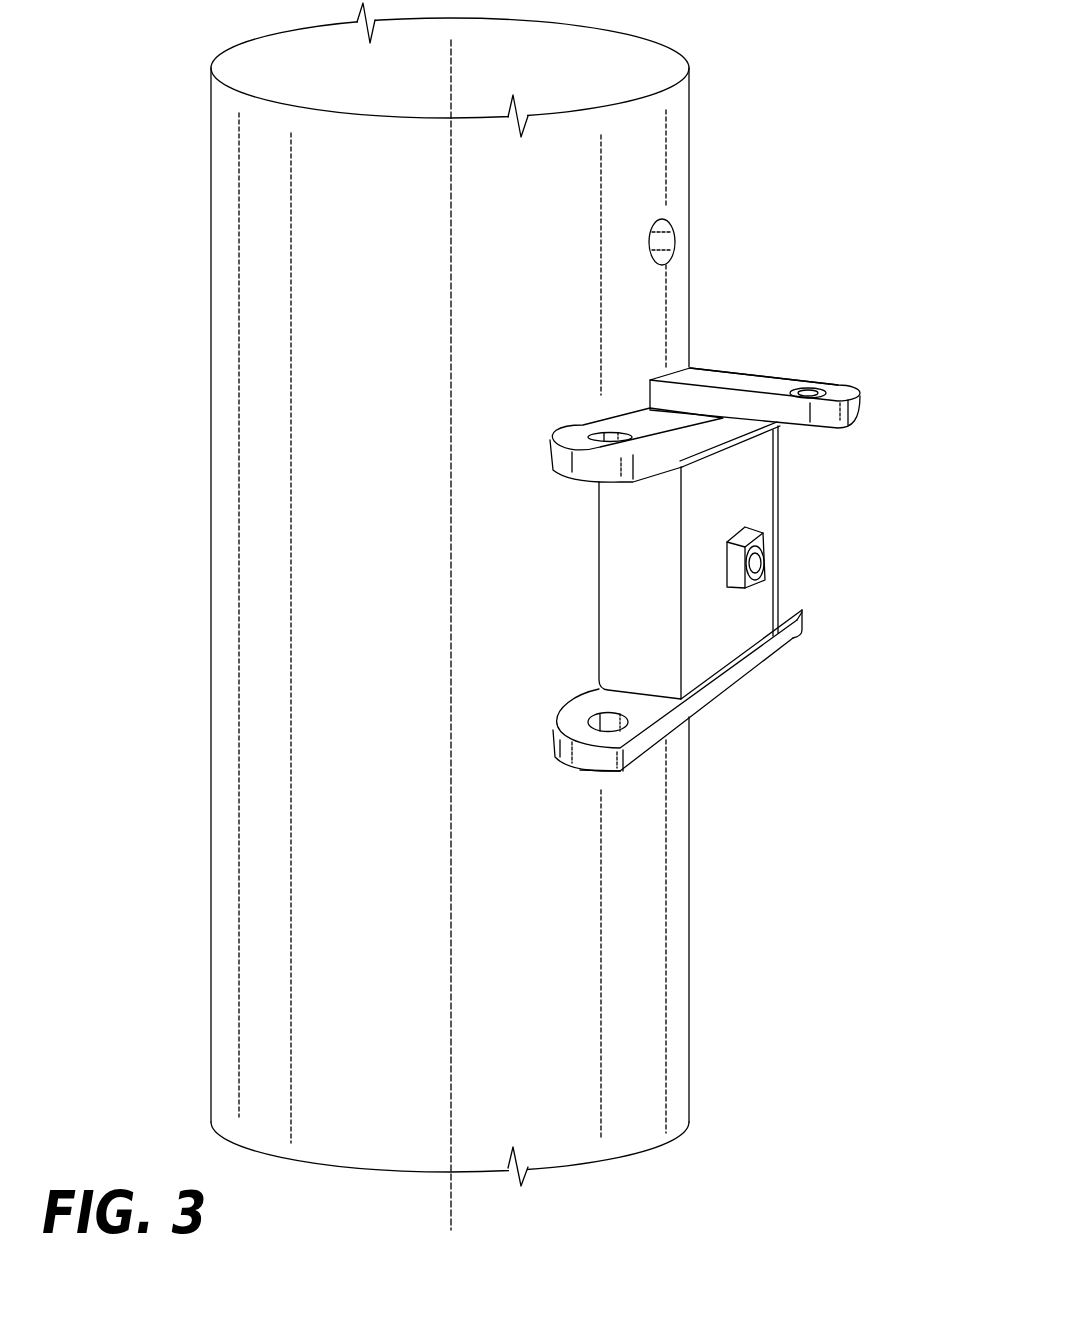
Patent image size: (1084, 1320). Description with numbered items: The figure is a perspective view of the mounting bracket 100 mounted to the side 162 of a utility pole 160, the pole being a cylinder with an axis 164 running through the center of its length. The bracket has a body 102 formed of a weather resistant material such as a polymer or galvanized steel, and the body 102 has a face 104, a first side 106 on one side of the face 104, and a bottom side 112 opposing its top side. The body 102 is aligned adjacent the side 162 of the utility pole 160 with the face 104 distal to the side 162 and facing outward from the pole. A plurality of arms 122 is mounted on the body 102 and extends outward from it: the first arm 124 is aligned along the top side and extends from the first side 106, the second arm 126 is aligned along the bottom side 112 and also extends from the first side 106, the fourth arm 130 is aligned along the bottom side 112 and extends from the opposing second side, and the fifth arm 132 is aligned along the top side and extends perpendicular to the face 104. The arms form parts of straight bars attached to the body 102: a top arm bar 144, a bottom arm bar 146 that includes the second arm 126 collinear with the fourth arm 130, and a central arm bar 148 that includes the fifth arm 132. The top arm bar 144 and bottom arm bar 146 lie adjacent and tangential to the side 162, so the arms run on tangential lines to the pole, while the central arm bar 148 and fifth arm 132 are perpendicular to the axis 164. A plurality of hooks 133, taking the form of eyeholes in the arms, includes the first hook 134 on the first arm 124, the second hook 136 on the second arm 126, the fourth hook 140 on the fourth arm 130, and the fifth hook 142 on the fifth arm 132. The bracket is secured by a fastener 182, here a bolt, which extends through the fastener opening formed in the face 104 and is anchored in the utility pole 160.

The mounting bracket 100 is at (738, 592).
The body 102 is at (792, 588).
The face 104 is at (768, 458).
The first side 106 is at (630, 640).
The bottom side 112 is at (720, 703).
The plurality of arms 122 is at (807, 375).
The first arm 124 is at (633, 422).
The second arm 126 is at (653, 753).
The fourth arm 130 is at (793, 640).
The fifth arm 132 is at (780, 382).
The plurality of hooks 133 is at (607, 792).
The first hook 134 is at (600, 433).
The second hook 136 is at (597, 715).
The fourth hook 140 is at (802, 613).
The fifth hook 142 is at (817, 384).
The top arm bar 144 is at (643, 410).
The bottom arm bar 146 is at (743, 677).
The central arm bar 148 is at (740, 373).
The utility pole 160 is at (250, 200).
The side 162 is at (690, 308).
The axis 164 is at (451, 78).
The fastener 182 is at (760, 532).